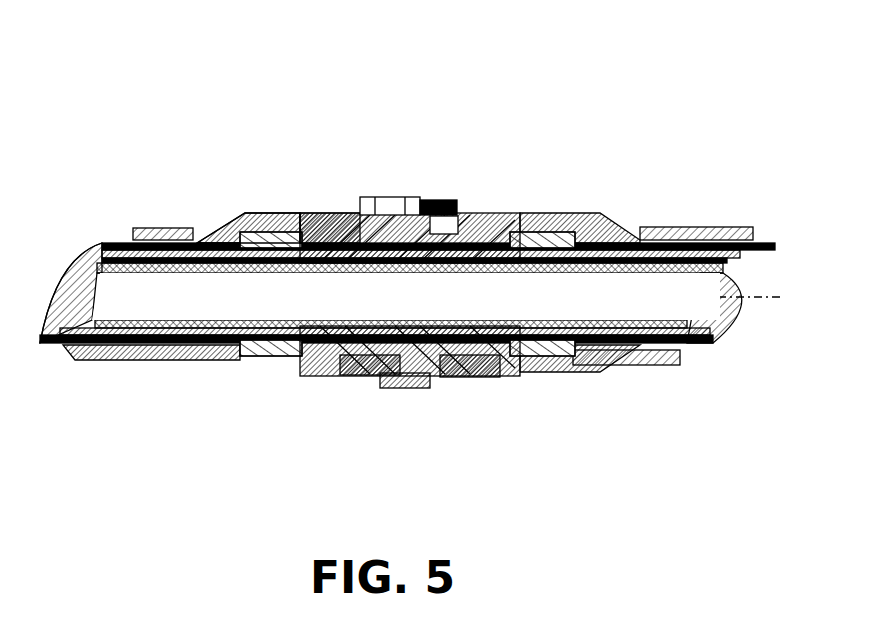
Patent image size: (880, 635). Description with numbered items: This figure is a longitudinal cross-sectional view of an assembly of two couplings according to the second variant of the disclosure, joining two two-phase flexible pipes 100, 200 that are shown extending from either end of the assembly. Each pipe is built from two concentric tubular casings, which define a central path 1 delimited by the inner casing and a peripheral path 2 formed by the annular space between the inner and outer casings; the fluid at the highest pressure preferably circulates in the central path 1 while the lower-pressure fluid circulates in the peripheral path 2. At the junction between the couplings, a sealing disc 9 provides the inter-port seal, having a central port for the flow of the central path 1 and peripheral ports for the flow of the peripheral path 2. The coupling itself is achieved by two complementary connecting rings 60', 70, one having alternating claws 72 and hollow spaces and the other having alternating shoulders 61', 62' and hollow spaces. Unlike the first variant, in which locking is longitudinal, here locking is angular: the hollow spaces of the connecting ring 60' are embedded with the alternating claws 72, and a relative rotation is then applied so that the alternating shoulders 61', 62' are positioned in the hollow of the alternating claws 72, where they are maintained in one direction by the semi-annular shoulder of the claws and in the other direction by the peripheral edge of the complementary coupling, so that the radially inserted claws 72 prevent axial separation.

The central path 1 is at (111, 265).
The peripheral path 2 is at (159, 307).
The sealing disc 9 is at (463, 383).
The complementary connecting ring 60' is at (281, 140).
The alternating shoulder 61' is at (375, 406).
The alternating shoulder 62' is at (248, 205).
The complementary connecting ring 70 is at (556, 156).
The alternating claws 72 is at (400, 192).
The two-phase flexible pipe 100 is at (181, 468).
The two-phase flexible pipe 200 is at (640, 468).